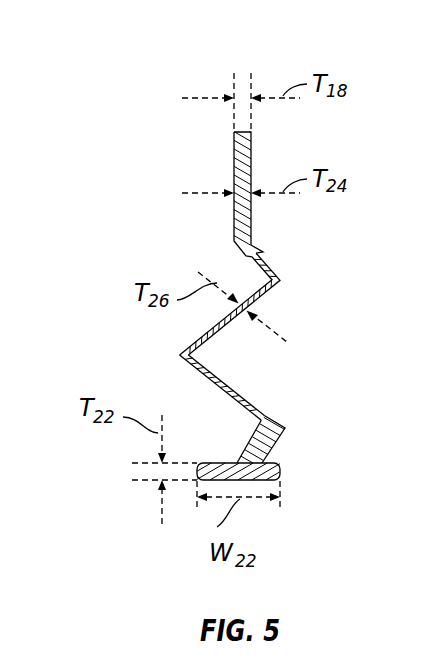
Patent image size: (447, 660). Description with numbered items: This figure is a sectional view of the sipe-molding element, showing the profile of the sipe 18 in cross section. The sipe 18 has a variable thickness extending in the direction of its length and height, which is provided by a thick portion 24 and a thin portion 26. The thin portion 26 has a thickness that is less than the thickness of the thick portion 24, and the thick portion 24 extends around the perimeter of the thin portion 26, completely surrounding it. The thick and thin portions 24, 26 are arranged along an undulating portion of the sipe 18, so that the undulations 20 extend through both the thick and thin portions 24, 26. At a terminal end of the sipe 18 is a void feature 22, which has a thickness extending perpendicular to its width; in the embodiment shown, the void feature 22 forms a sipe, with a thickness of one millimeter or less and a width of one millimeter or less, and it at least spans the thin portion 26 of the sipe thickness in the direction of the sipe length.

The sipe 18 is at (116, 64).
The undulations 20 is at (280, 281).
The void feature 22 is at (281, 473).
The thick portion 24 is at (251, 152).
The thin portion 26 is at (233, 393).